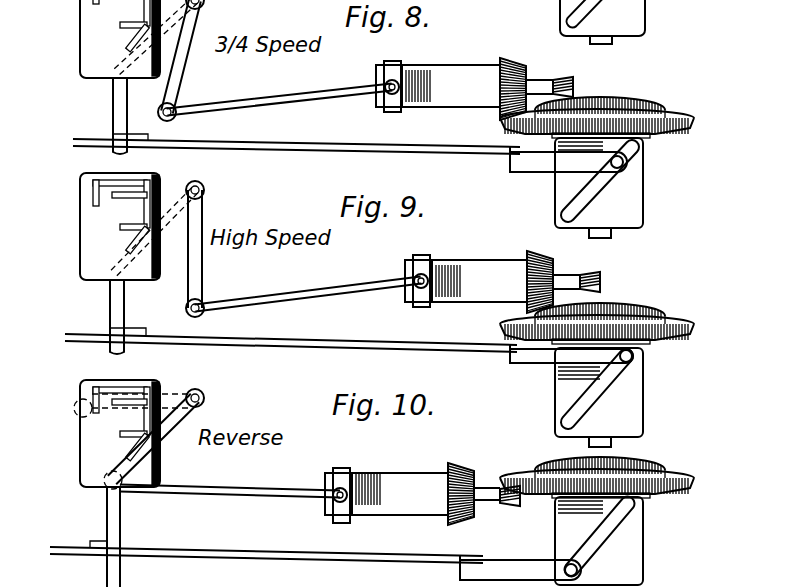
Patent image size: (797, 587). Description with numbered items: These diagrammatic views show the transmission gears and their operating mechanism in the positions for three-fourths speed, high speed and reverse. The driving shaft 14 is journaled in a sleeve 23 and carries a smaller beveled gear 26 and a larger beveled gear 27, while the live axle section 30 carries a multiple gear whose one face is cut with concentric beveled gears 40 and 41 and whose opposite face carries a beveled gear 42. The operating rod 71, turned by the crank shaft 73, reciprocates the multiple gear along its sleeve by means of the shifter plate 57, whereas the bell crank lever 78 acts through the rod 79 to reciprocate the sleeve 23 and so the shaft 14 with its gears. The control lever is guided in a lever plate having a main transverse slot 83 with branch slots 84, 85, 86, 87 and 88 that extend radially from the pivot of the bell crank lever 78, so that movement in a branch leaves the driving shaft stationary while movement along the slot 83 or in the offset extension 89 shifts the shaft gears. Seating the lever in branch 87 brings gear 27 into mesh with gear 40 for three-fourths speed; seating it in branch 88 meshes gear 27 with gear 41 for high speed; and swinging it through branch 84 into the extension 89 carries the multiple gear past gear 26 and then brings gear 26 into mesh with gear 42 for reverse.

In FIG. 10, the shaft 14 is at (489, 498).
In FIG. 8, the sleeve 23 is at (451, 86).
In FIG. 9, the sleeve 23 is at (490, 262).
In FIG. 10, the sleeve 23 is at (415, 471).
In FIG. 8, the beveled gear 26 is at (574, 82).
In FIG. 9, the beveled gear 26 is at (603, 281).
In FIG. 10, the beveled gear 26 is at (516, 505).
In FIG. 8, the second larger beveled gear 27 is at (517, 69).
In FIG. 9, the second larger beveled gear 27 is at (553, 269).
In FIG. 10, the second larger beveled gear 27 is at (470, 463).
In FIG. 8, the live section of rear axle 30 is at (605, 43).
In FIG. 9, the live section of rear axle 30 is at (606, 240).
In FIG. 8, the beveled gear 40 is at (689, 118).
In FIG. 9, the beveled gear 40 is at (688, 323).
In FIG. 10, the beveled gear 40 is at (690, 478).
In FIG. 8, the beveled gear 41 is at (650, 104).
In FIG. 9, the beveled gear 41 is at (648, 308).
In FIG. 10, the beveled gear 41 is at (657, 463).
In FIG. 8, the beveled gear 42 is at (686, 128).
In FIG. 9, the beveled gear 42 is at (668, 338).
In FIG. 10, the beveled gear 42 is at (687, 484).
In FIG. 8, the upper shifter plate 57 is at (593, 8).
In FIG. 9, the upper shifter plate 57 is at (640, 402).
In FIG. 10, the upper shifter plate 57 is at (643, 552).
In FIG. 8, the operating rod 71 is at (332, 143).
In FIG. 9, the operating rod 71 is at (367, 340).
In FIG. 10, the operating rod 71 is at (333, 556).
In FIG. 10, the crank shaft 73 is at (116, 517).
In FIG. 8, the bell crank lever 78 is at (203, 25).
In FIG. 9, the bell crank lever 78 is at (203, 224).
In FIG. 10, the bell crank lever 78 is at (199, 389).
In FIG. 8, the rod 79 is at (291, 98).
In FIG. 9, the rod 79 is at (338, 290).
In FIG. 10, the rod 79 is at (250, 490).
In FIG. 9, the transversely extending slot 83 is at (168, 200).
In FIG. 9, the branch slot 84 is at (133, 184).
In FIG. 10, the branch slot 84 is at (128, 390).
In FIG. 9, the branch slot 85 is at (121, 200).
In FIG. 9, the branch slot 86 is at (123, 229).
In FIG. 8, the branch slot 87 is at (128, 33).
In FIG. 9, the branch slot 87 is at (128, 248).
In FIG. 9, the branch slot 88 is at (142, 257).
In FIG. 9, the offset extension 89 is at (93, 200).
In FIG. 10, the offset extension 89 is at (75, 407).